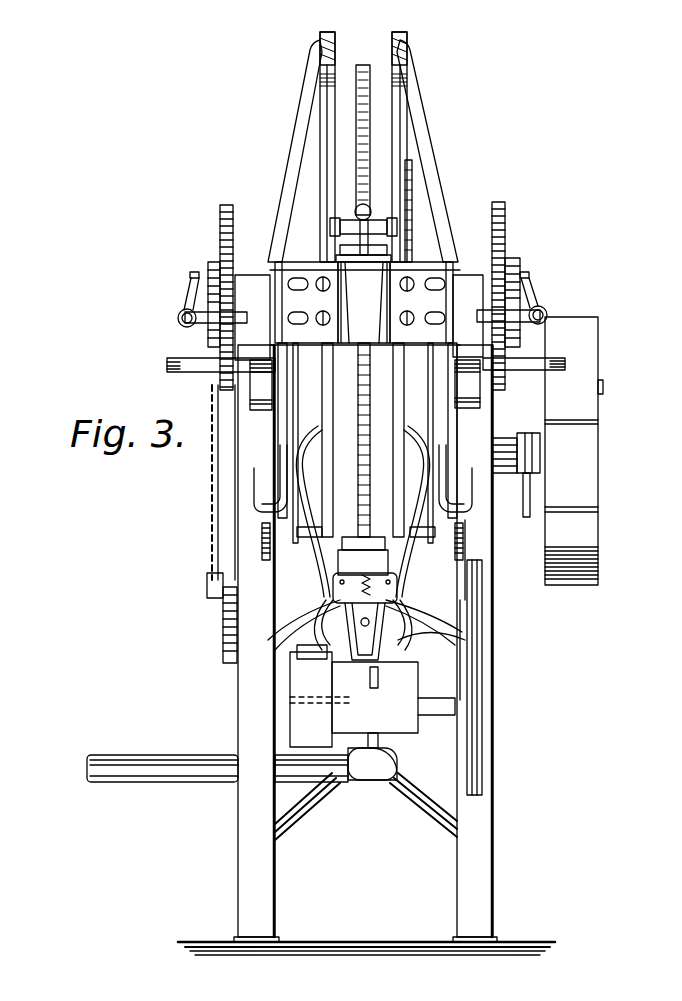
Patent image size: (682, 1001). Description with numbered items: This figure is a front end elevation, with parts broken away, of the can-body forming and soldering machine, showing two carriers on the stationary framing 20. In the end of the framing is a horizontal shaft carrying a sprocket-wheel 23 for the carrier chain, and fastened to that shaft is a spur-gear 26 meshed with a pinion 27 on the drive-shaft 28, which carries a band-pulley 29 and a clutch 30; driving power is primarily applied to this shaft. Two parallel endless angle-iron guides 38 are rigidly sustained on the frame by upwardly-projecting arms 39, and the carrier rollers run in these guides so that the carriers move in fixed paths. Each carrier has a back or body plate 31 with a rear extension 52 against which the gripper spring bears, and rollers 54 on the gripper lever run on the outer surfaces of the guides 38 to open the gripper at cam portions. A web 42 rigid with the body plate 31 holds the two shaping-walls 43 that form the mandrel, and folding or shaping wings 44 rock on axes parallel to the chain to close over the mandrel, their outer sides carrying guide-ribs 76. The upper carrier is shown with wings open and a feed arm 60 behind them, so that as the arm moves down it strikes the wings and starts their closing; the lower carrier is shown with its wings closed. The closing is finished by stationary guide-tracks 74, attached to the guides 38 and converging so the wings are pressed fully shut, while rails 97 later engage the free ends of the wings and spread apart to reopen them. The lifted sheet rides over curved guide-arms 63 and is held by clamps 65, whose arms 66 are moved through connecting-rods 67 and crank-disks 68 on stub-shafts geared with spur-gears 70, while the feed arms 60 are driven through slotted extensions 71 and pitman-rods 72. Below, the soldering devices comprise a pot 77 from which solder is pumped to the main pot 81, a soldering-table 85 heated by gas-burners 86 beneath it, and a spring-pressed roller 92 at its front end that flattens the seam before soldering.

The stationary framing 20 is at (238, 853).
The sprocket-wheel 23 is at (370, 133).
The spur-gear 26 is at (410, 203).
The pinion 27 is at (465, 538).
The drive-shaft 28 is at (510, 462).
The band-pulley 29 is at (574, 451).
The clutch 30 is at (525, 432).
The back or body plate 31 is at (366, 593).
The angle-iron guides 38 is at (327, 33).
The upwardly-projecting arms 39 is at (290, 146).
The web 42 is at (457, 623).
The shaping-walls 43 is at (364, 473).
The folding or shaping wings 44 is at (267, 708).
The rear extension 52 is at (368, 206).
The rollers 54 is at (332, 226).
The arms 60 is at (290, 403).
The guide-arms 63 is at (272, 392).
The clamps 65 is at (252, 293).
The arms 66 is at (212, 320).
The connecting-rods 67 is at (188, 297).
The crank-disks 68 is at (208, 268).
The spur-gears 70 is at (220, 218).
The slotted extensions 71 is at (273, 497).
The pitman-rods 72 is at (364, 502).
The guide-tracks 74 is at (227, 530).
The guide-ribs 76 is at (297, 645).
The pot 77 is at (320, 699).
The main pot 81 is at (297, 657).
The soldering-table 85 is at (393, 697).
The gas-burners or heater 86 is at (380, 762).
The roller 92 is at (375, 686).
The rails 97 is at (317, 633).